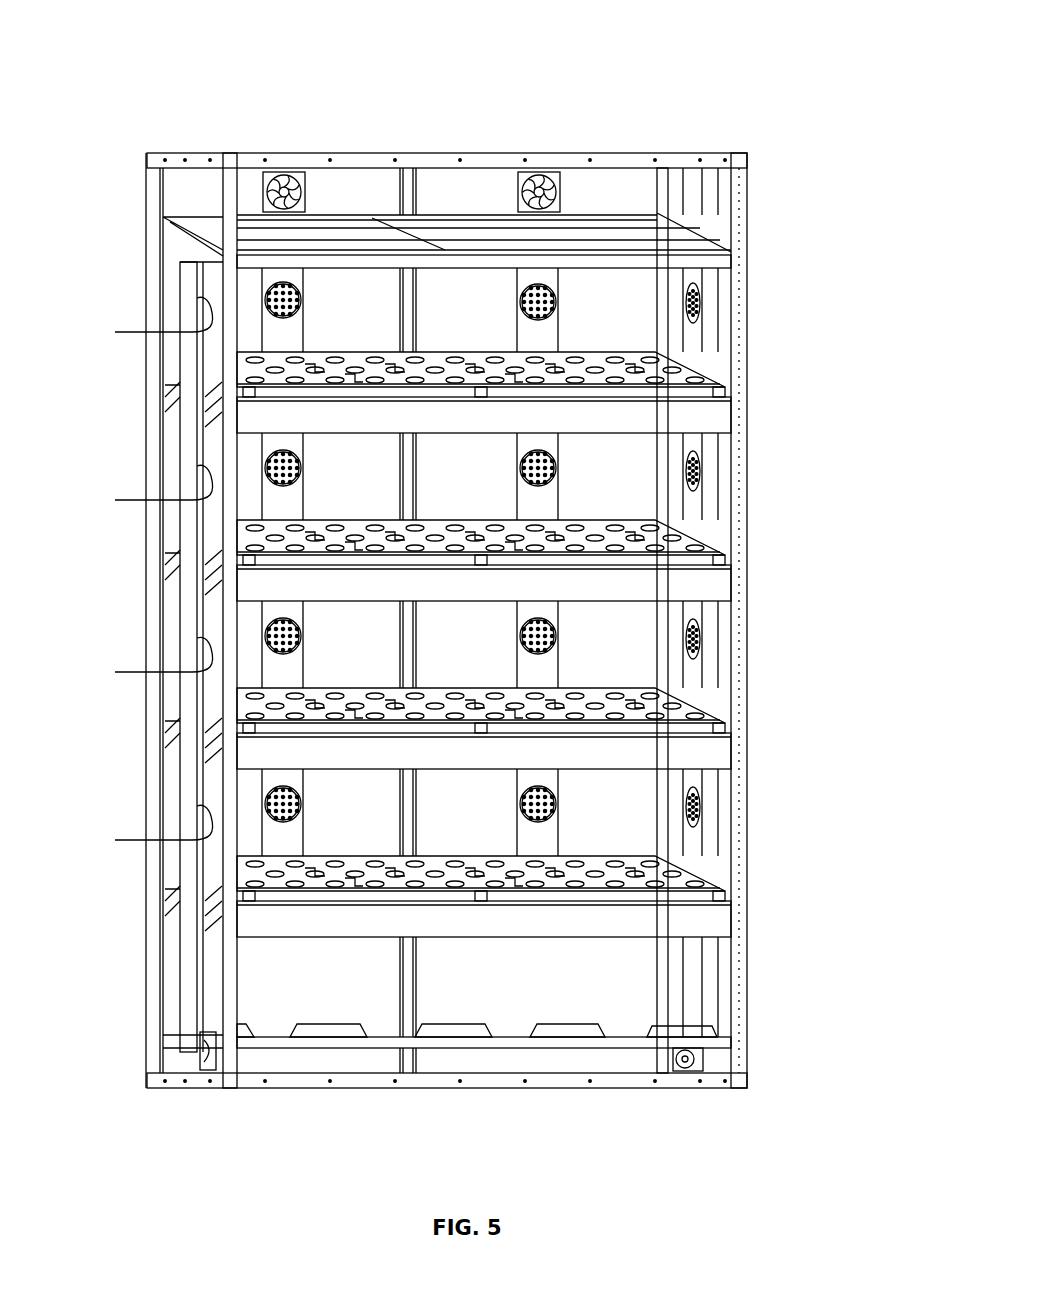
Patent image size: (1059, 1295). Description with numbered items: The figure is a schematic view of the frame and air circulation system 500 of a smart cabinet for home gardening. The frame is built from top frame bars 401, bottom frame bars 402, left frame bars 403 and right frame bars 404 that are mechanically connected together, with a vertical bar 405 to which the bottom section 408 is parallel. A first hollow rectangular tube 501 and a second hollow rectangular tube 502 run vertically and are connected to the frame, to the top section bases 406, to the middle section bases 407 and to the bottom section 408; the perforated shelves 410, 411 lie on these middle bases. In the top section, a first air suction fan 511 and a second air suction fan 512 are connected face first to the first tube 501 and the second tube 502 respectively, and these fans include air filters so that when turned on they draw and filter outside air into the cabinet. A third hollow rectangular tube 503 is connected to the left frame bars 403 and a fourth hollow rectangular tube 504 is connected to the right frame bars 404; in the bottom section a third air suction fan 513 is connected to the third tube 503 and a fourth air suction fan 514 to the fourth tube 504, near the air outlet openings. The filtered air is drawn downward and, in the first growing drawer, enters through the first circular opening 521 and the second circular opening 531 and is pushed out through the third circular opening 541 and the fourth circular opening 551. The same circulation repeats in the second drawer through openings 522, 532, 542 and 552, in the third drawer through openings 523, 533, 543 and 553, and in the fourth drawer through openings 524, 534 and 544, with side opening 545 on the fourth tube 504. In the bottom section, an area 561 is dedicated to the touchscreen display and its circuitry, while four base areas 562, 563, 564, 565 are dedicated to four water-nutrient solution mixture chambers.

The air circulation system 500 is at (660, 84).
The top frame bars 401 is at (181, 152).
The bottom frame bars 402 is at (471, 1088).
The left frame bars 403 is at (146, 292).
The right frame bars 404 is at (672, 190).
The vertical bar 405 is at (430, 970).
The top section bases 406 is at (735, 258).
The middle section bases 407 is at (484, 667).
The bottom section 408 is at (733, 1040).
The perforated shelf 410 is at (440, 352).
The perforated shelf 411 is at (428, 520).
The first hollow rectangular tube 501 is at (305, 336).
The second hollow rectangular tube 502 is at (558, 336).
The third hollow rectangular tube 503 is at (178, 428).
The fourth hollow rectangular tube 504 is at (710, 690).
The first air suction fan 511 is at (306, 190).
The second air suction fan 512 is at (561, 190).
The third air suction fan 513 is at (210, 1070).
The fourth air suction fan 514 is at (681, 1070).
The first circular air opening 521 is at (303, 298).
The circular air opening 522 is at (302, 463).
The circular air opening 523 is at (302, 631).
The circular air opening 524 is at (302, 800).
The second circular air opening 531 is at (519, 300).
The circular air opening 532 is at (519, 470).
The circular air opening 533 is at (519, 640).
The circular air opening 534 is at (519, 806).
The third circular air opening 541 is at (142, 321).
The circular air opening 542 is at (142, 489).
The circular air opening 543 is at (142, 661).
The circular air opening 544 is at (142, 829).
The side lamp 545 is at (686, 810).
The fourth circular air opening 551 is at (686, 302).
The circular air opening 552 is at (686, 472).
The circular air opening 553 is at (686, 642).
The touchscreen display area 561 is at (250, 1022).
The base area 562 is at (325, 1023).
The base area 563 is at (430, 1023).
The base area 564 is at (535, 1023).
The base area 565 is at (655, 1025).